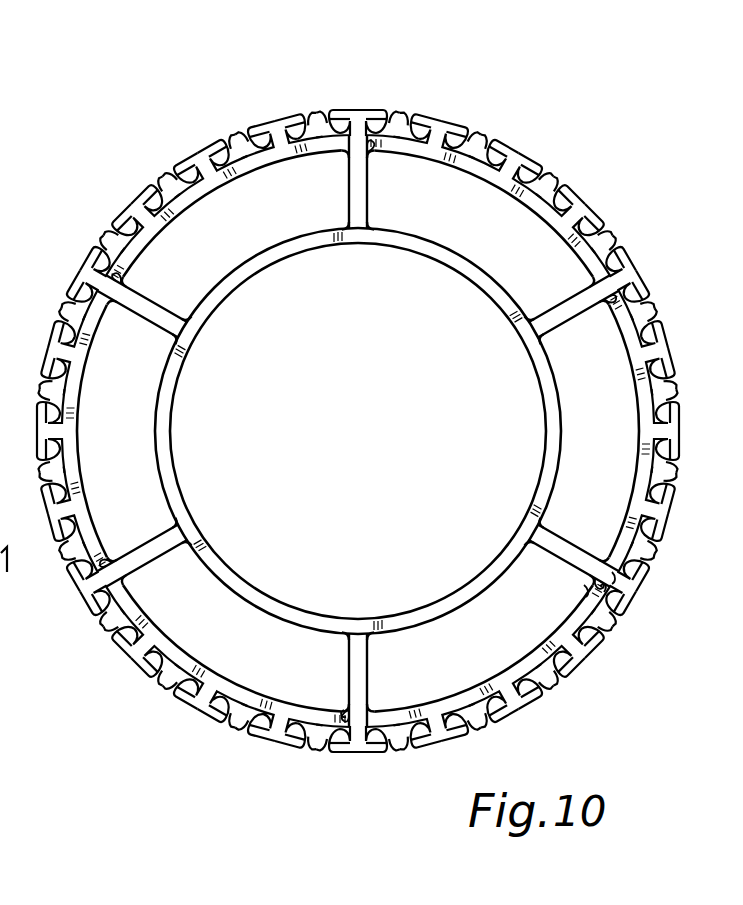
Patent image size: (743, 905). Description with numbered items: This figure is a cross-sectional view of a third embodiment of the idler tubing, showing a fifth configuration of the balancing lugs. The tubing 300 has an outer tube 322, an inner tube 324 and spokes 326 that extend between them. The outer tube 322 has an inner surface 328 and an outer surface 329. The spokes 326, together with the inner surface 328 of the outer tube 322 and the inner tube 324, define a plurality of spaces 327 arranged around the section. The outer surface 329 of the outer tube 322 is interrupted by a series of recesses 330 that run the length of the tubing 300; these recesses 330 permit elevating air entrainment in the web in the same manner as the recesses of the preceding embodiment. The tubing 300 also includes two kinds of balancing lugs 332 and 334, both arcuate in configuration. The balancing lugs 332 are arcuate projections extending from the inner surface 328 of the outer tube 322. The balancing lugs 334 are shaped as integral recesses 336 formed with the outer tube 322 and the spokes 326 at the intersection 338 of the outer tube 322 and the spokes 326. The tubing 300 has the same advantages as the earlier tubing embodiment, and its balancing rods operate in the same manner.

The tubing 300 is at (369, 418).
The outer tube 322 is at (517, 161).
The inner tube 324 is at (446, 264).
The spokes 326 is at (345, 187).
The spaces 327 is at (552, 249).
The inner surface 328 is at (447, 162).
The outer surface 329 is at (451, 118).
The recesses 330 is at (399, 104).
The balancing lugs 332 is at (542, 700).
The balancing lugs 334 is at (603, 593).
The integral recesses 336 is at (579, 591).
The intersection 338 is at (616, 578).